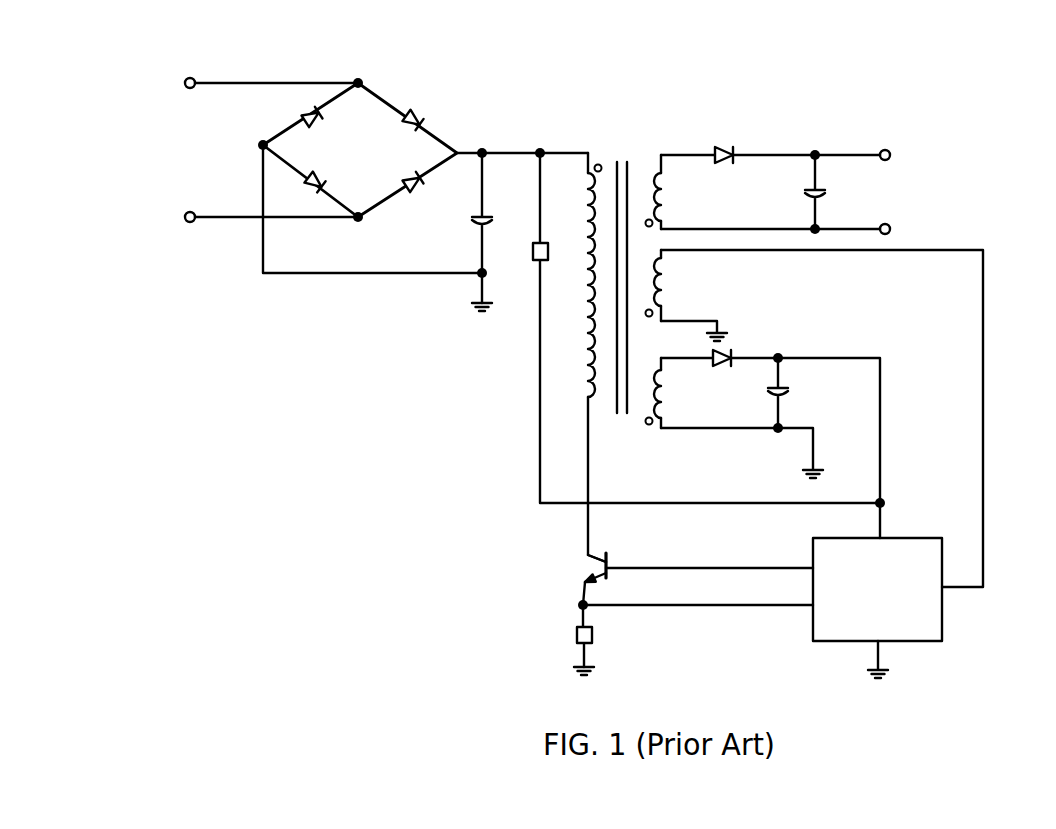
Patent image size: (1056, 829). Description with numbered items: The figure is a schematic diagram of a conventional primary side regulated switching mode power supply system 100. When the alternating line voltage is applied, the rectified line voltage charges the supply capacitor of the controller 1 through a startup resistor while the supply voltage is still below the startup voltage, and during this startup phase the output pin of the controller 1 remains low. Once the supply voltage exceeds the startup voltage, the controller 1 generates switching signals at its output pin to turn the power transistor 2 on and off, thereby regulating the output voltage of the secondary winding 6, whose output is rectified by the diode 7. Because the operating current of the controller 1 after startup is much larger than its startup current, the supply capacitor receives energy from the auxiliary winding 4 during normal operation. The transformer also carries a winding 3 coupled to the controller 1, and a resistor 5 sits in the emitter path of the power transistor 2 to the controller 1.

The prior art flyback power supply circuit 100 is at (940, 112).
The controller 1 is at (950, 617).
The power transistor 2 is at (608, 547).
The feedback winding 3 is at (667, 286).
The auxiliary winding 4 is at (667, 389).
The current sense resistor 5 is at (598, 637).
The secondary winding 6 is at (667, 192).
The output rectifier diode 7 is at (725, 140).